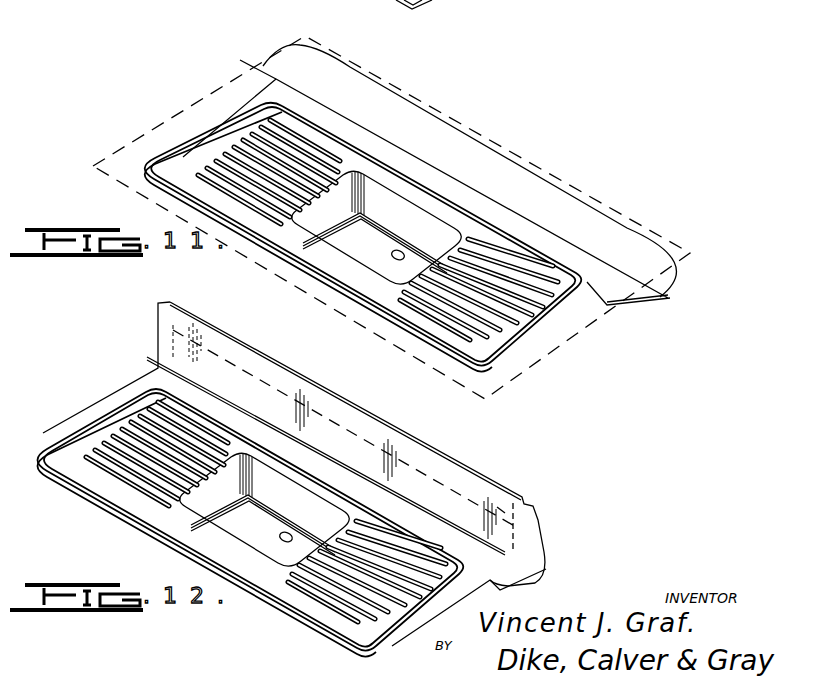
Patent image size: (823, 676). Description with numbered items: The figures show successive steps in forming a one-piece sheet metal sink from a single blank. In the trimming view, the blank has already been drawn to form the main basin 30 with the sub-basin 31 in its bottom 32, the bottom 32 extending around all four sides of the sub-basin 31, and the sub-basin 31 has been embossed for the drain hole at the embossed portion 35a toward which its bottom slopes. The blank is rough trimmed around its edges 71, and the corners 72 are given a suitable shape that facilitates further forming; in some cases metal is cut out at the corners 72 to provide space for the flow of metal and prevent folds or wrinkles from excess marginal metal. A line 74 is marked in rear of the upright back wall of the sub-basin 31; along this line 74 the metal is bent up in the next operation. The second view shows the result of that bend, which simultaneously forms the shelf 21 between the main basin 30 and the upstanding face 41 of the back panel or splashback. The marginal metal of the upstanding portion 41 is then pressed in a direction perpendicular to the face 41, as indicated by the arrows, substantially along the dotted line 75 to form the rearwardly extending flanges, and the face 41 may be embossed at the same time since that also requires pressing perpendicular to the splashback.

In FIG. 11, the main basin 30 is at (229, 118).
In FIG. 12, the main basin 30 is at (118, 409).
In FIG. 11, the sub-basin 31 is at (330, 246).
In FIG. 12, the sub-basin 31 is at (213, 527).
In FIG. 11, the bottom of the main basin 32 is at (178, 156).
In FIG. 11, the embossed portion for drain hole 35a is at (392, 258).
In FIG. 12, the embossed portion for drain hole 35a is at (280, 540).
In FIG. 11, the edges of the blank 71 is at (530, 372).
In FIG. 11, the corners of the blank 72 is at (298, 48).
In FIG. 12, the corners of the blank 72 is at (169, 301).
In FIG. 11, the bending line 74 is at (252, 92).
In FIG. 12, the back ledge or shelf 21 is at (142, 373).
In FIG. 12, the dotted line 75 is at (132, 352).
In FIG. 12, the face of the splashback 41 is at (498, 505).